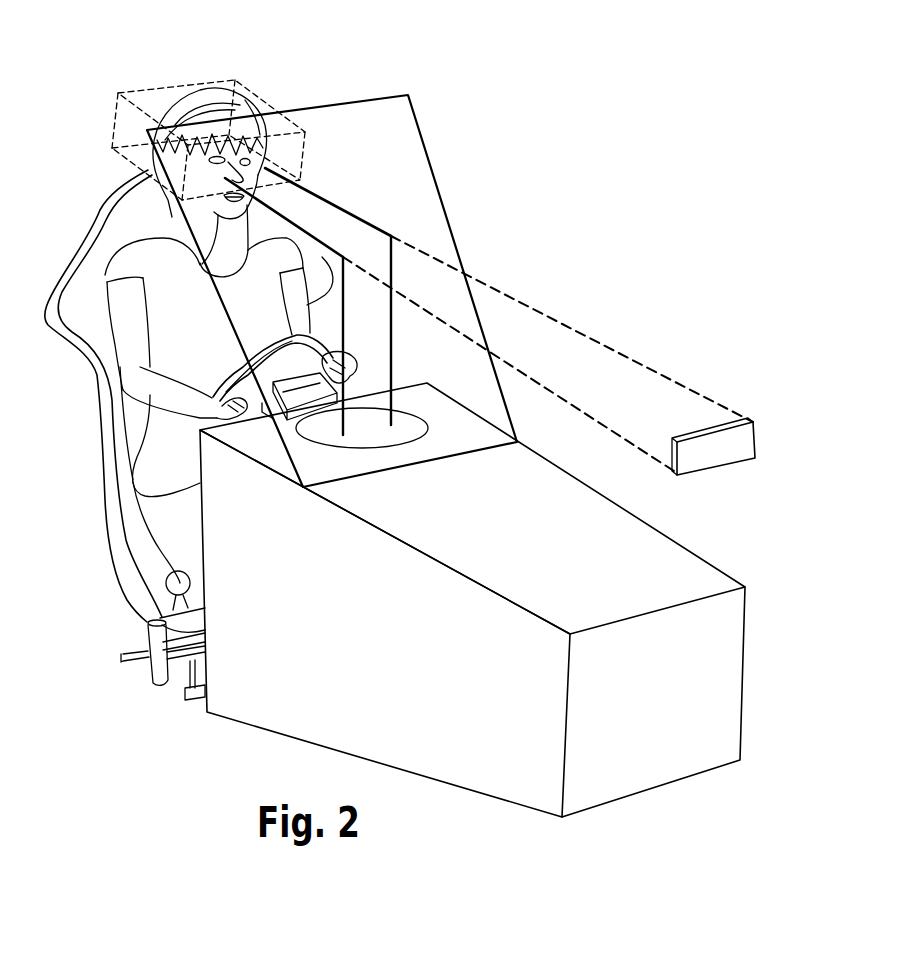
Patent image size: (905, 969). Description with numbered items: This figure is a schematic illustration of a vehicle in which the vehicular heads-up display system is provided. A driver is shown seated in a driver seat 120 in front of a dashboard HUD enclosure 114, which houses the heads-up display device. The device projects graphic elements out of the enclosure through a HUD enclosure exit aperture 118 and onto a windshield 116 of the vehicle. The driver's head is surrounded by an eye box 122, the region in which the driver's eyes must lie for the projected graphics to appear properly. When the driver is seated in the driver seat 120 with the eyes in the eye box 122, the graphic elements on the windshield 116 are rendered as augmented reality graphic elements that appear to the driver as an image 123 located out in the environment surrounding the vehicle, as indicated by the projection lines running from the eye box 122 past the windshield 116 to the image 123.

The dashboard HUD enclosure 114 is at (592, 503).
The windshield 116 is at (445, 217).
The HUD enclosure exit aperture 118 is at (418, 425).
The driver seat 120 is at (62, 277).
The eye box 122 is at (256, 94).
The image 123 is at (756, 430).